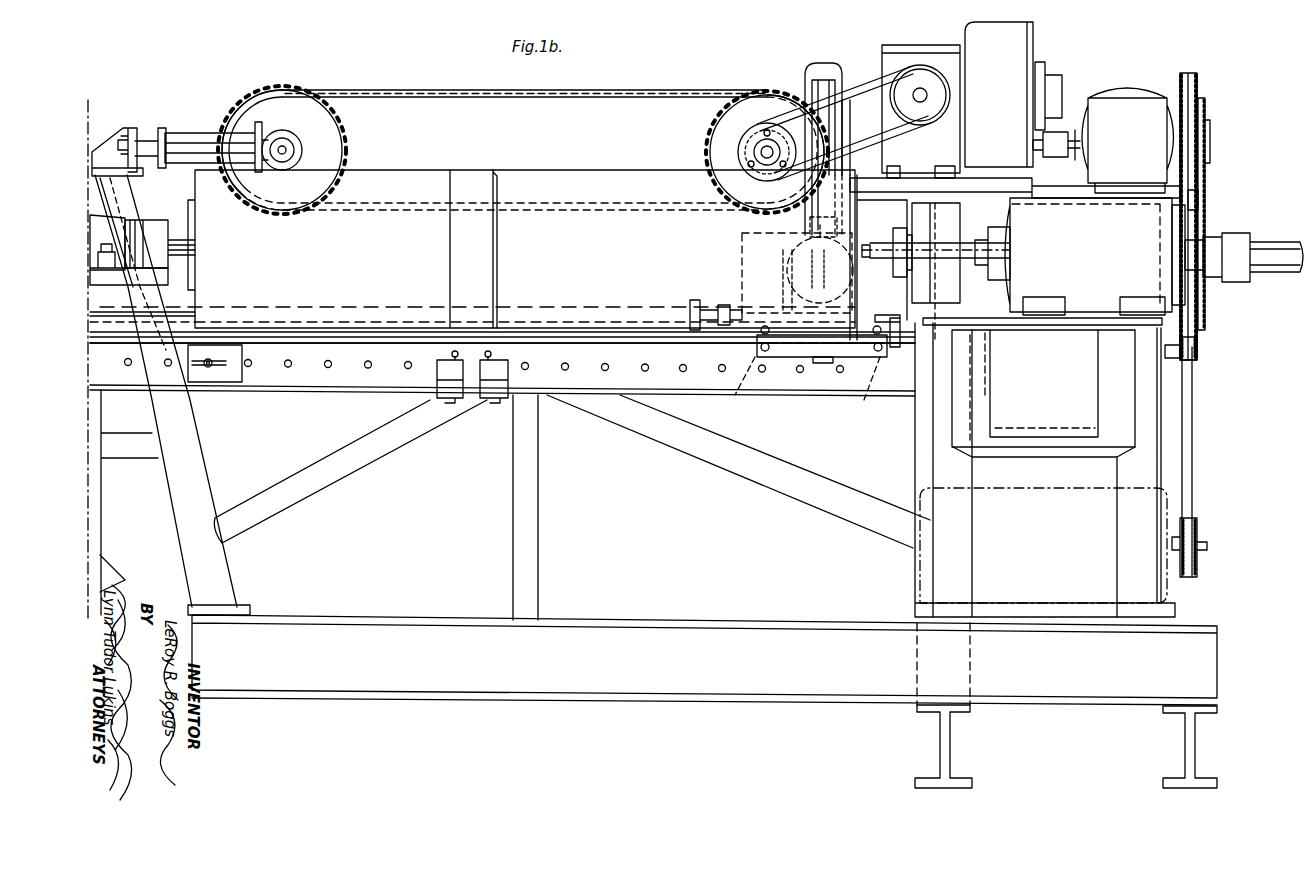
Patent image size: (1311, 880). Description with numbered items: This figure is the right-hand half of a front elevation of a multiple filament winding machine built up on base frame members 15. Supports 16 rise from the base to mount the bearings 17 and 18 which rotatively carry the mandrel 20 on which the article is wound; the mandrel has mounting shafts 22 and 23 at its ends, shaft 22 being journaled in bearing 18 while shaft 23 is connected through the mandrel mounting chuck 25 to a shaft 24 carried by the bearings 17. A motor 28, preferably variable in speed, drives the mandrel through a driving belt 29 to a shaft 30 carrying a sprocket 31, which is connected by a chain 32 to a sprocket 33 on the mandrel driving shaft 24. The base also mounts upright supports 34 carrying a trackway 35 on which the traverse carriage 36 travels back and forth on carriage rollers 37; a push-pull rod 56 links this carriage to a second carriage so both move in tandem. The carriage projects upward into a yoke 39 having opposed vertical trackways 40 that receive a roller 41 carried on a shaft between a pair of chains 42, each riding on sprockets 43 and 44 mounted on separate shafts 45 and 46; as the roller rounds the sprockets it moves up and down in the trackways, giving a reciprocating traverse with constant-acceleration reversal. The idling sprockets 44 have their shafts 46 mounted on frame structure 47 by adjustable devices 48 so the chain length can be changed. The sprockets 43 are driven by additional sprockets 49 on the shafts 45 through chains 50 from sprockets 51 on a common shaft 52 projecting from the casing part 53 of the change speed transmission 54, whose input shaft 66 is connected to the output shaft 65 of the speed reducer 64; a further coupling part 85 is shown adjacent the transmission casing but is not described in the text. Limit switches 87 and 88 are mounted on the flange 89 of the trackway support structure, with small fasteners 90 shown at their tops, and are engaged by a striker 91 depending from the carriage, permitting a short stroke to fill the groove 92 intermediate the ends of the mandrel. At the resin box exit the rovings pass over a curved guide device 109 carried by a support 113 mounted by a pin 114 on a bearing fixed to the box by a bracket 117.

The base frame members 15 is at (1164, 745).
The supports 16 is at (195, 447).
The bearings 17 is at (1105, 249).
The bearing 18 is at (118, 220).
The mandrel 20 is at (567, 163).
The mounting shaft 22 is at (182, 225).
The mounting shaft 23 is at (878, 243).
The shaft 24 is at (1258, 242).
The mandrel mounting chuck 25 is at (956, 225).
The motor 28 is at (1057, 548).
The driving belt 29 is at (1192, 455).
The shaft 30 is at (1208, 120).
The sprocket 31 is at (1200, 100).
The chain 32 is at (1200, 195).
The sprocket 33 is at (1200, 325).
The upright supports 34 is at (540, 535).
The trackway 35 is at (657, 348).
The traverse carriage 36 is at (897, 350).
The carriage rollers 37 is at (806, 381).
The yoke 39 is at (845, 110).
The vertical trackways 40 is at (822, 68).
The roller 41 is at (848, 138).
The chains 42 is at (657, 90).
The sprockets 43 is at (730, 115).
The sprockets 44 is at (330, 128).
The shafts 45 is at (767, 140).
The shafts 46 is at (283, 130).
The frame structure 47 is at (100, 135).
The adjustable devices 48 is at (180, 130).
The sprockets 49 is at (740, 145).
The chains 50 is at (840, 88).
The sprockets 51 is at (912, 78).
The shaft 52 is at (930, 92).
The casing part 53 is at (950, 140).
The transmission mechanism 54 is at (1038, 33).
The push-pull rod 56 is at (562, 303).
The speed reducer 64 is at (1128, 97).
The output shaft 65 is at (1076, 130).
The input shaft 66 is at (1040, 160).
The flange 85 is at (1060, 75).
The limit switch 87 is at (437, 385).
The limit switch 88 is at (508, 392).
The flange 89 is at (678, 393).
The screw 90 is at (492, 352).
The striker 91 is at (826, 365).
The groove 92 is at (484, 165).
The guide device 109 is at (795, 262).
The support 113 is at (808, 247).
The pin 114 is at (800, 220).
The bracket 117 is at (785, 290).